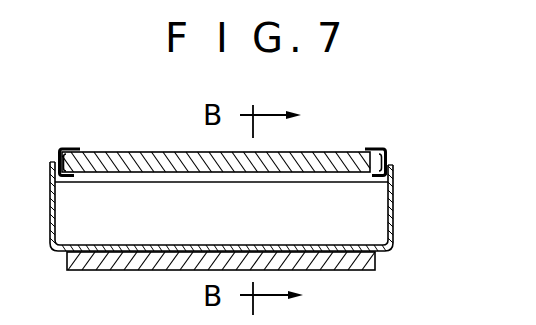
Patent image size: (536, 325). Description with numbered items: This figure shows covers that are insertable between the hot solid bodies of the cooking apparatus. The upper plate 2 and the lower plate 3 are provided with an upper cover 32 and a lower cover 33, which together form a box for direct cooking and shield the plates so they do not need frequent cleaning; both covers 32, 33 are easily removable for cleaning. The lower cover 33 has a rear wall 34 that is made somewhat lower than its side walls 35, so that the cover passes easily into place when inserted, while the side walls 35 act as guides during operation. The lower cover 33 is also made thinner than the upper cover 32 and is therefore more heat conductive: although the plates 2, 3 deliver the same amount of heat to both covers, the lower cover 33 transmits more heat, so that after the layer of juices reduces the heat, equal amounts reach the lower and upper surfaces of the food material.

The upper plate 2 is at (161, 163).
The lower plate 3 is at (372, 262).
The upper cover 32 is at (323, 161).
The lower cover 33 is at (398, 213).
The rear wall 34 is at (82, 209).
The side walls 35 is at (388, 169).